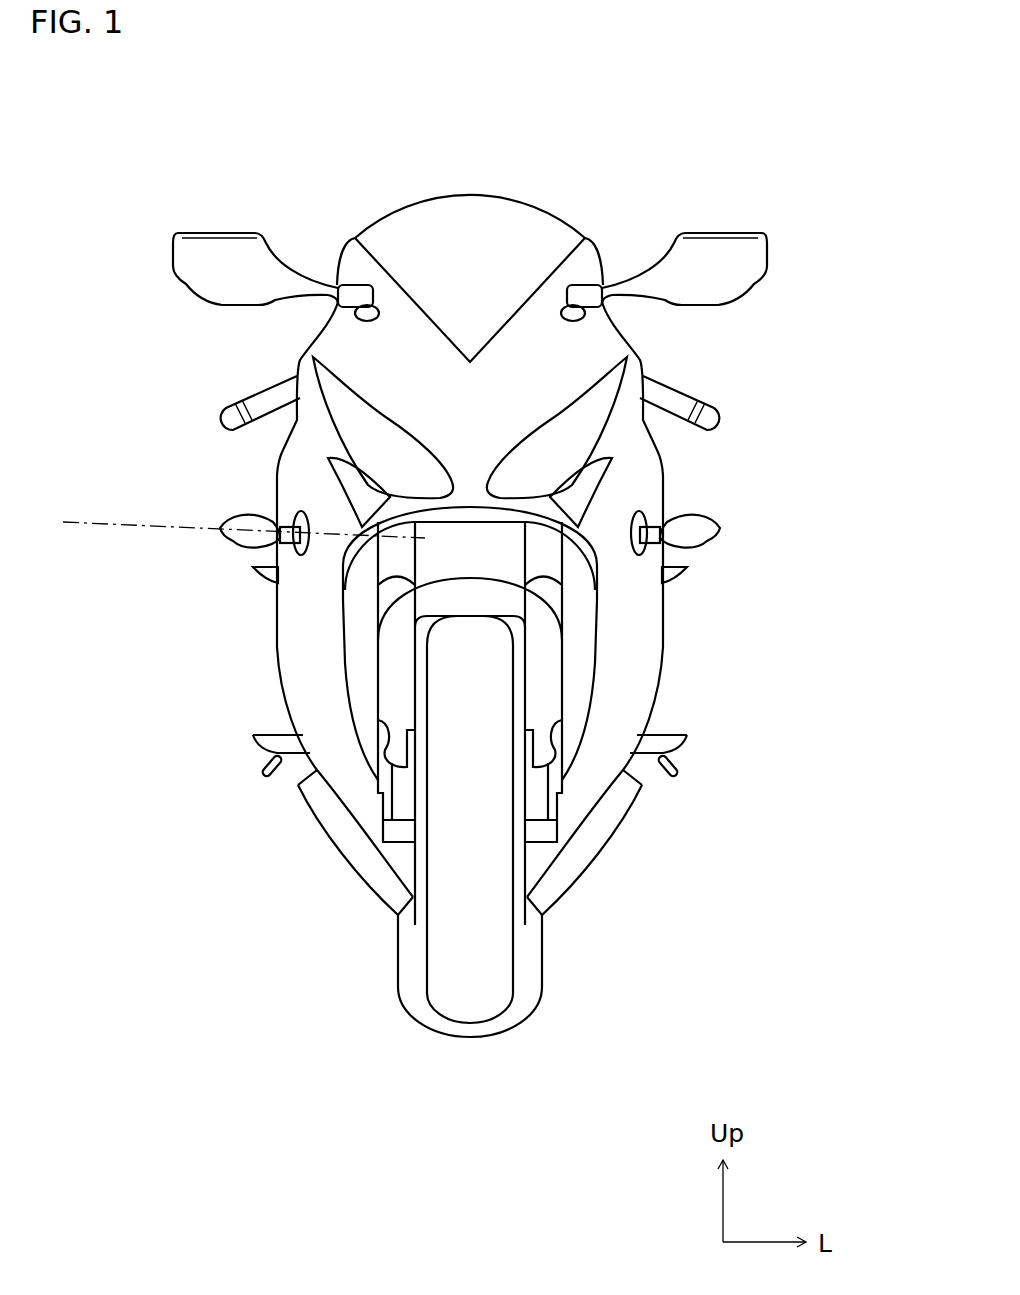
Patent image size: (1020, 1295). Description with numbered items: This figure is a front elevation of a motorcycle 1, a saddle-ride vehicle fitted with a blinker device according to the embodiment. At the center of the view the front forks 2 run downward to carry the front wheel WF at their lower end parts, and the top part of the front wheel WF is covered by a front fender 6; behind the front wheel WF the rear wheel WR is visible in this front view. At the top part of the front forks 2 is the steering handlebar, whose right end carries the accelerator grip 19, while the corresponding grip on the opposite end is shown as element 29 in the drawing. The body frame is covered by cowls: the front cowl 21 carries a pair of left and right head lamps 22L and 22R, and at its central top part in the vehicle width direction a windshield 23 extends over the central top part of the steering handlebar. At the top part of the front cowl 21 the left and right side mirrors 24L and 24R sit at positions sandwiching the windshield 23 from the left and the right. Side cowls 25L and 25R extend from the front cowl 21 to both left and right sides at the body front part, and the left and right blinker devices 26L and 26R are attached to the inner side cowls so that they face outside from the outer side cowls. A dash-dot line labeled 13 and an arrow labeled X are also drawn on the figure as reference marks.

The motorcycle 1 is at (400, 147).
The front forks 2 is at (400, 598).
The front fender 6 is at (392, 690).
The center line of vehicle width direction 13 is at (107, 523).
The accelerator grip 19 is at (243, 400).
The front cowl 21 is at (607, 350).
The right head lamp 22R is at (353, 420).
The left head lamp 22L is at (587, 420).
The windshield 23 is at (520, 217).
The right side mirror 24R is at (213, 245).
The left side mirror 24L is at (728, 245).
The right side cowl 25R is at (302, 682).
The left side cowl 25L is at (638, 682).
The right blinker device 26R is at (247, 540).
The left blinker device 26L is at (700, 538).
The left handlebar 29 is at (693, 400).
The direction X is at (435, 539).
The front wheel WF is at (452, 1003).
The rear wheel WR is at (407, 960).